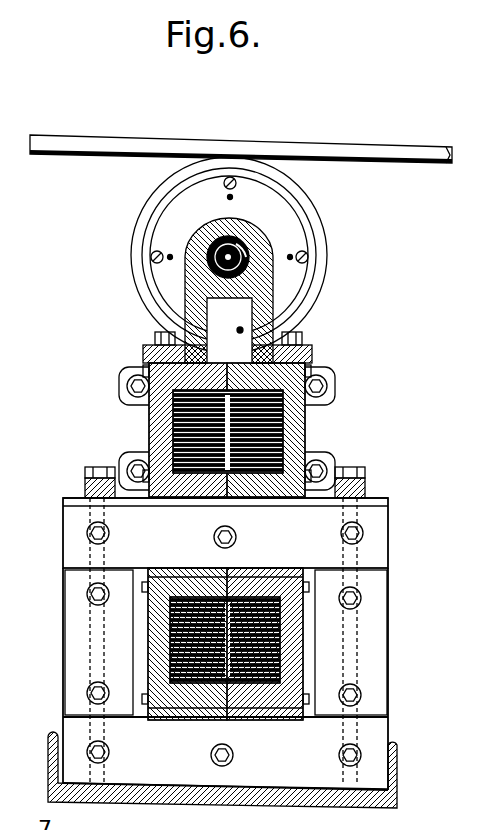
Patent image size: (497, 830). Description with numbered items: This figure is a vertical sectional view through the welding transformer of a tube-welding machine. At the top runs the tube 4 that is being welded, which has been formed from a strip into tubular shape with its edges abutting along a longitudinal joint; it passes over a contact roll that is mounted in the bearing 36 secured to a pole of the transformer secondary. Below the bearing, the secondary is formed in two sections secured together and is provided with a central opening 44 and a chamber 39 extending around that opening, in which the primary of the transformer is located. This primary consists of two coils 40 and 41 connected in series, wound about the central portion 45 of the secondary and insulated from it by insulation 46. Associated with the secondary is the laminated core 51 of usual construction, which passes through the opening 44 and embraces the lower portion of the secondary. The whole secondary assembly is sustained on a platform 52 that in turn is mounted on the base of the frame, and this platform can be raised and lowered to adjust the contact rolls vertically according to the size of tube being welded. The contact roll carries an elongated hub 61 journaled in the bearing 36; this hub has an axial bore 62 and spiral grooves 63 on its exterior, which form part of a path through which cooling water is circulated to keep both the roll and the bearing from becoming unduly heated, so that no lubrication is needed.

The tube 4 is at (403, 153).
The bearing 36 is at (197, 268).
The chamber 39 is at (307, 430).
The coil 40 is at (170, 430).
The coil 41 is at (307, 447).
The central opening 44 is at (195, 497).
The central portion 45 is at (193, 498).
The insulation 46 is at (165, 448).
The laminated core 51 is at (372, 667).
The platform 52 is at (365, 811).
The hub 61 is at (263, 247).
The axial bore 62 is at (247, 243).
The spiral groove 63 is at (210, 230).